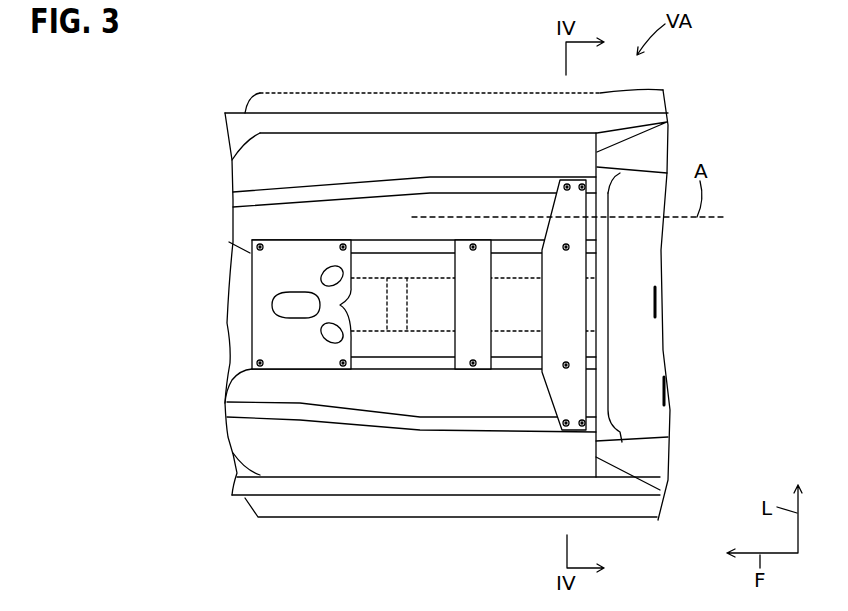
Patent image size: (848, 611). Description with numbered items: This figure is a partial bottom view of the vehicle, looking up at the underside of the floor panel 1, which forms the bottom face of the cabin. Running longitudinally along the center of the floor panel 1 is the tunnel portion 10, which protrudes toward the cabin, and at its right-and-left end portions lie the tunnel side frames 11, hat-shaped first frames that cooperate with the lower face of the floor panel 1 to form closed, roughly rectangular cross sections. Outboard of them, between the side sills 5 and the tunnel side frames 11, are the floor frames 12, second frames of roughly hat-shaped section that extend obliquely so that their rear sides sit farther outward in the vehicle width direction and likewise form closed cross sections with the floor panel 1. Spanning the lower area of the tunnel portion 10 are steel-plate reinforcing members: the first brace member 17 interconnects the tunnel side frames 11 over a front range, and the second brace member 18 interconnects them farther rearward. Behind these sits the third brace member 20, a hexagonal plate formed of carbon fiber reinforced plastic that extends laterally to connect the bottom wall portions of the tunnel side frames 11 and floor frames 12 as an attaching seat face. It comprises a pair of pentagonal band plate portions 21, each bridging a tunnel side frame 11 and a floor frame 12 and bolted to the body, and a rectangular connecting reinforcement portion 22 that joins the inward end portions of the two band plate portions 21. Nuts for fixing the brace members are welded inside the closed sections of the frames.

The floor panel 1 is at (522, 148).
The side sill 5 is at (467, 122).
The tunnel portion 10 is at (237, 287).
The tunnel side frame 11 is at (377, 364).
The floor frame 12 is at (420, 433).
The first brace member 17 is at (308, 254).
The second brace member 18 is at (485, 247).
The third brace member 20 is at (540, 392).
The band plate portion 21 is at (577, 230).
The connecting reinforcement portion 22 is at (577, 302).